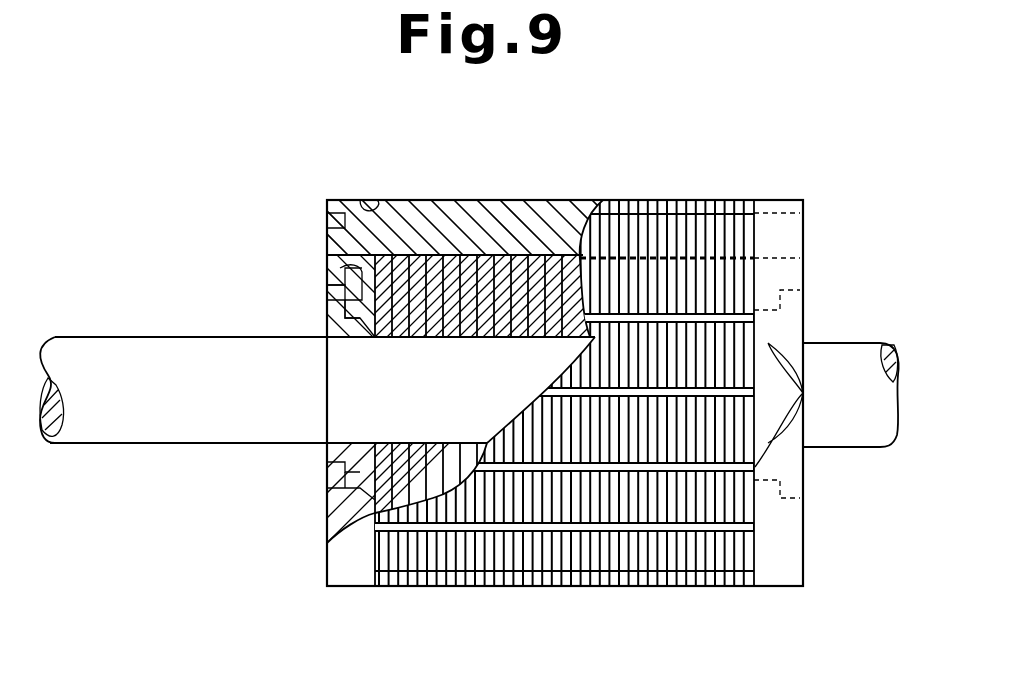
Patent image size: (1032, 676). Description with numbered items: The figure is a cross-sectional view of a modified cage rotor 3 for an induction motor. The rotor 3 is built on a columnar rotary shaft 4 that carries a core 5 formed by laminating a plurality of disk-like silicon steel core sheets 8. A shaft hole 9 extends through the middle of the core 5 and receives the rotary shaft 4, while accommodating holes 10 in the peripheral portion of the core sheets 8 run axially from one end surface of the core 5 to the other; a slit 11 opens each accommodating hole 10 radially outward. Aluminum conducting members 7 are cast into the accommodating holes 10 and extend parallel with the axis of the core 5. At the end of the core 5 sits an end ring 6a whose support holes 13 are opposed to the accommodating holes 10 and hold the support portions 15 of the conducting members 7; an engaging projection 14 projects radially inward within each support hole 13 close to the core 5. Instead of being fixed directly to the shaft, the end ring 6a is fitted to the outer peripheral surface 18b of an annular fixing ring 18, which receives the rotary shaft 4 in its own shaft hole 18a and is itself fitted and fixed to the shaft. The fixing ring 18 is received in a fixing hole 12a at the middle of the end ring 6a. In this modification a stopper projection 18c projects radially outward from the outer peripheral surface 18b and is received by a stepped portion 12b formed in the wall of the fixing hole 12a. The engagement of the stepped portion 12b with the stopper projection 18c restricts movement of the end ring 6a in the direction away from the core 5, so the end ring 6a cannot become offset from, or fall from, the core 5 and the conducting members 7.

The cage rotor 3 is at (815, 192).
The rotary shaft 4 is at (62, 333).
The core 5 is at (605, 588).
The end ring 6a is at (327, 532).
The aluminum conducting member 7 is at (538, 207).
The core sheet 8 is at (480, 588).
The shaft hole 9 is at (445, 338).
The accommodating hole 10 is at (450, 252).
The slit 11 is at (827, 405).
The fixing hole 12a is at (327, 466).
The stepped portion 12b is at (327, 484).
The support hole 13 is at (327, 212).
The engaging projection 14 is at (372, 204).
The support portion 15 is at (327, 228).
The fixing ring 18 is at (327, 325).
The shaft hole 18a is at (336, 339).
The outer peripheral surface 18b is at (327, 300).
The stopper projection 18c is at (327, 278).